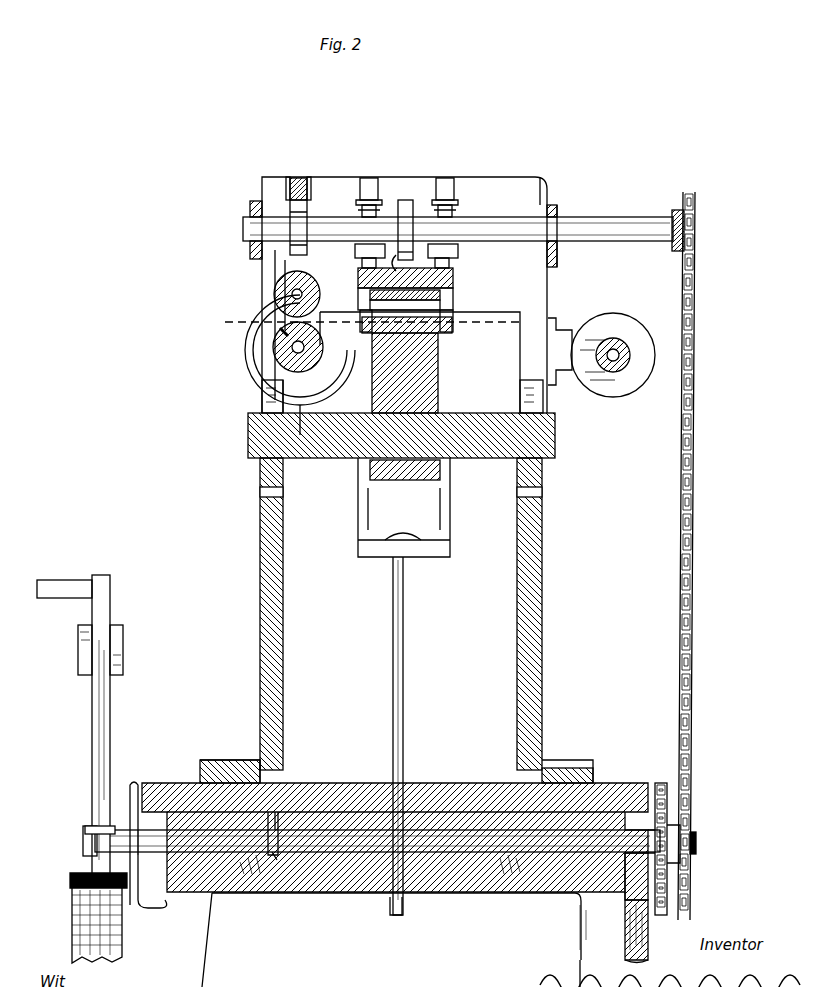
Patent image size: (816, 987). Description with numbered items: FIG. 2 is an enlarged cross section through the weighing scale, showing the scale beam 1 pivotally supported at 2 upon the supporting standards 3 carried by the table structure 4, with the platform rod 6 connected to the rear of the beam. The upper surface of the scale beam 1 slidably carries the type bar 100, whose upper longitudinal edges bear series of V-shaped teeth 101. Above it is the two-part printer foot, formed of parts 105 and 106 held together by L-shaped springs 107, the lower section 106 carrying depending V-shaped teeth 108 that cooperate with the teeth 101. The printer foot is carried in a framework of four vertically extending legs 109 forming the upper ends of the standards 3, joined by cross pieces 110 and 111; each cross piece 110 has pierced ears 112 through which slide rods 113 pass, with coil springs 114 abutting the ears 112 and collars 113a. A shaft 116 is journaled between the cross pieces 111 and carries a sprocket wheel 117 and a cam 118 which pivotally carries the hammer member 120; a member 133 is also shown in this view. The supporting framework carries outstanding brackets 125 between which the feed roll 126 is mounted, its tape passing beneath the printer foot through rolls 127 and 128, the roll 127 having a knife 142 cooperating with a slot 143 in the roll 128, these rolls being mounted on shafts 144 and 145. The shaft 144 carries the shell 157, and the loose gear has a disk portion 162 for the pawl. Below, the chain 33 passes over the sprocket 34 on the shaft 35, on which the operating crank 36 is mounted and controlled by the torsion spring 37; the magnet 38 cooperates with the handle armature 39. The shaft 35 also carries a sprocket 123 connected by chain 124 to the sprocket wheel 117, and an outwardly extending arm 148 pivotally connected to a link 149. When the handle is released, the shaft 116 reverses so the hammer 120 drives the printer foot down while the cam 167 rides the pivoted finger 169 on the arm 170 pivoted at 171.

The scale beam 1 is at (425, 383).
The pivot 2 is at (248, 448).
The supporting standards 3 is at (262, 598).
The table structure 4 is at (352, 785).
The platform rod 6 is at (404, 668).
The chain 33 is at (660, 785).
The sprocket 34 is at (628, 880).
The shaft 35 is at (498, 846).
The operating crank 36 is at (104, 718).
The torsion spring 37 is at (136, 782).
The magnet 38 is at (75, 916).
The handle armature 39 is at (123, 632).
The type bar 100 is at (452, 333).
The V-shaped teeth 101 is at (350, 330).
The printer foot upper part 105 is at (453, 274).
The printer foot lower part 106 is at (372, 290).
The L-shaped springs 107 is at (450, 318).
The depending V-shaped teeth 108 is at (405, 304).
The vertically extending legs 109 is at (272, 393).
The cross piece 110 is at (490, 195).
The cross piece 111 is at (262, 205).
The pierced ears 112 is at (355, 251).
The slide rods 113 is at (368, 178).
The collars 113a is at (362, 202).
The coil springs 114 is at (362, 210).
The shaft 116 is at (640, 227).
The sprocket wheel 117 is at (686, 223).
The cam 118 is at (405, 212).
The hammer member 120 is at (411, 264).
The sprocket 123 is at (688, 878).
The chain 124 is at (690, 532).
The outstanding brackets 125 is at (558, 330).
The feed roll 126 is at (616, 345).
The roll 127 is at (262, 372).
The roll 128 is at (290, 288).
The housing wall 133 is at (520, 210).
The knife 142 is at (282, 330).
The slot 143 is at (270, 322).
The shaft 144 is at (302, 352).
The shaft 145 is at (302, 295).
The outwardly extending arm 148 is at (274, 856).
The link 149 is at (290, 822).
The shell 157 is at (302, 460).
The disk portion 162 is at (258, 350).
The cam 167 is at (295, 228).
The pivoted finger 169 is at (309, 185).
The arm 170 is at (298, 180).
The pivot 171 is at (290, 185).